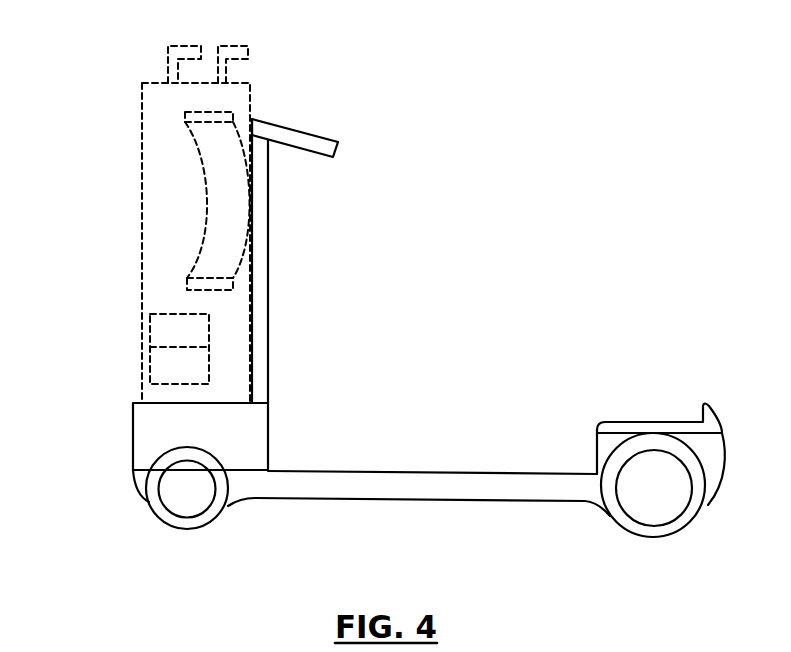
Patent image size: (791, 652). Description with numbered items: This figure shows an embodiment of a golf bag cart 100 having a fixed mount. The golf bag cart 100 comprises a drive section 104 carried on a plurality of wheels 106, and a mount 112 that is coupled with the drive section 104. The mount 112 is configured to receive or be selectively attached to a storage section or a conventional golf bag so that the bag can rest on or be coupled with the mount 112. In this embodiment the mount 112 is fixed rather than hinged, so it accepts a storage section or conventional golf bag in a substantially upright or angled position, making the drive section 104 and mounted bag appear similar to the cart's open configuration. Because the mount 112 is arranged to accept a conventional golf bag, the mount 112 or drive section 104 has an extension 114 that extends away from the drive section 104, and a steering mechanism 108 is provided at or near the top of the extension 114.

The golf bag cart 100 is at (387, 319).
The drive section 104 is at (373, 485).
The wheels 106 is at (176, 503).
The steering mechanism 108 is at (294, 139).
The mount 112 is at (147, 434).
The extension 114 is at (261, 268).